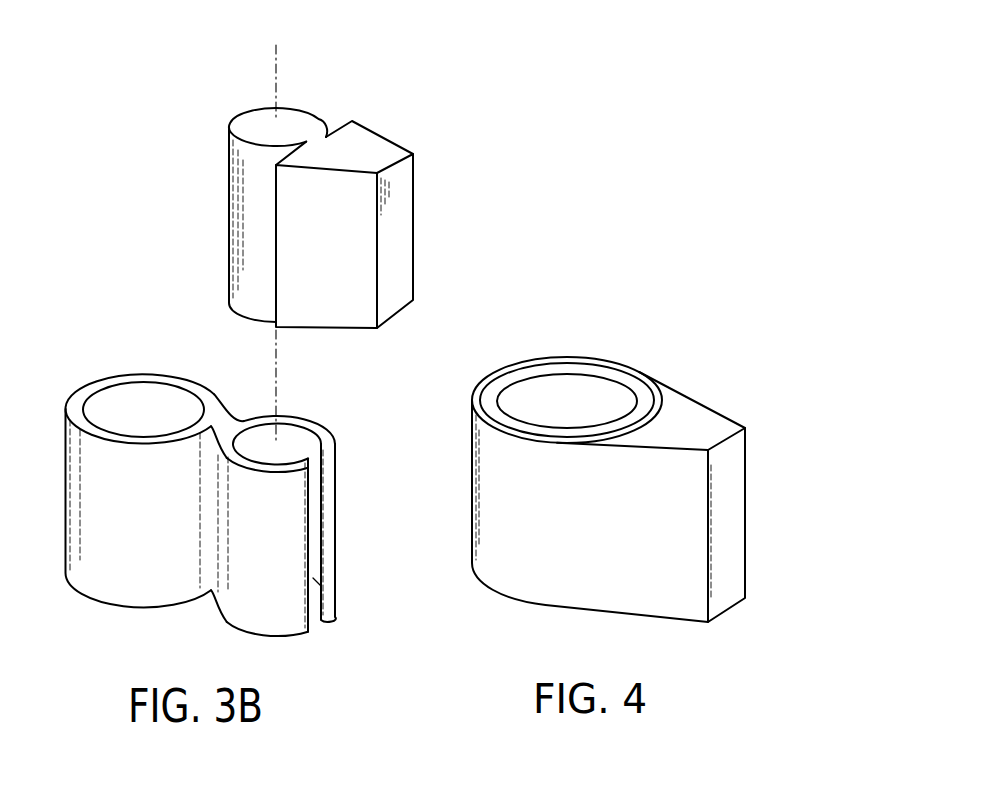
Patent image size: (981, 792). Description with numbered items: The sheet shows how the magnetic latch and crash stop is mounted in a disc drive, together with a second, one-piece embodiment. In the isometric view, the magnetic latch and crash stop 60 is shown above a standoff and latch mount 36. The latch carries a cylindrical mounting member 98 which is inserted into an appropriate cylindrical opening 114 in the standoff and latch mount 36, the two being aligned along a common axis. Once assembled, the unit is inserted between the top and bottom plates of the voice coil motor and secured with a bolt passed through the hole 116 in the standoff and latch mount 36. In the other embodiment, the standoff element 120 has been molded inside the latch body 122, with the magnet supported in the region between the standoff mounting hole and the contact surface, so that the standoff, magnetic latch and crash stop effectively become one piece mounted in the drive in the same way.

In FIG. 3B, the cylindrical mounting member 98 is at (299, 80).
In FIG. 3B, the magnetic latch and crash stop 60 is at (293, 126).
In FIG. 3B, the standoff and latch mount 36 is at (342, 473).
In FIG. 3B, the hole 116 is at (120, 400).
In FIG. 3B, the cylindrical opening 114 is at (292, 440).
In FIG. 4, the standoff element 120 is at (638, 408).
In FIG. 4, the latch body 122 is at (700, 430).